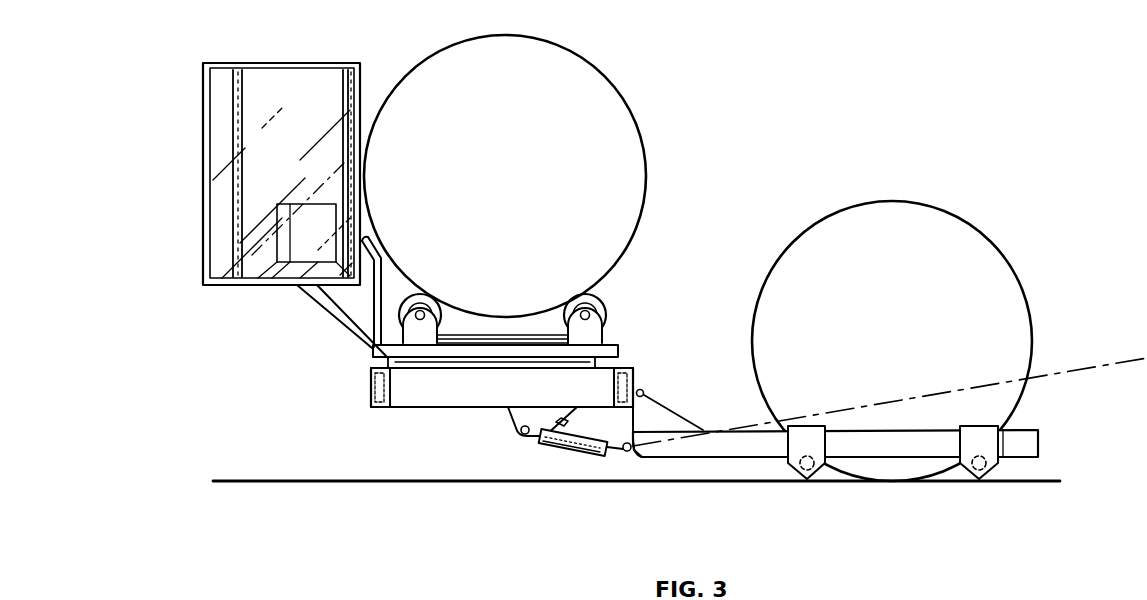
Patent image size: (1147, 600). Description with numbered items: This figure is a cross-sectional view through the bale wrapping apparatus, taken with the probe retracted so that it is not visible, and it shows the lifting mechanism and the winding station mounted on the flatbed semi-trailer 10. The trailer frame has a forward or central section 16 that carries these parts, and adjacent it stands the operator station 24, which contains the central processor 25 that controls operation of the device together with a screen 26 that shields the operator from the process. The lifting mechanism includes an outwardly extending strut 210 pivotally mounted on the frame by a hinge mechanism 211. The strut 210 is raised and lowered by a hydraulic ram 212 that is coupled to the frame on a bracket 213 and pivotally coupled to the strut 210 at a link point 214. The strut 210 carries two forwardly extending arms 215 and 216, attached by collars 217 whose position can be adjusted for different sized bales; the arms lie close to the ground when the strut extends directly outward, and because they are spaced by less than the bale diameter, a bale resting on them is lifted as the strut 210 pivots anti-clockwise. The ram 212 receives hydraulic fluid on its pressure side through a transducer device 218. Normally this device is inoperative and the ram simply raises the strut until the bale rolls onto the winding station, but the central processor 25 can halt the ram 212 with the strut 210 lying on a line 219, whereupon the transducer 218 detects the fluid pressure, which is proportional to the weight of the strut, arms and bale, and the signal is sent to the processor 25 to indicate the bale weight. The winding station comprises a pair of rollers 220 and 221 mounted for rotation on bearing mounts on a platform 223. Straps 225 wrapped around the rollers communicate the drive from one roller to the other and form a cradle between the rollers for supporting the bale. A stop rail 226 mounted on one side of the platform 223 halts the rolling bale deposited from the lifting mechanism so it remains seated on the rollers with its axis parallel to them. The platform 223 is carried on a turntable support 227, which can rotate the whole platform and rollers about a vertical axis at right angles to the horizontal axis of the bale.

The flatbed semi-trailer 10 is at (462, 413).
The forward section 16 is at (364, 385).
The operator station 24 is at (194, 178).
The central processor 25 is at (292, 238).
The screen 26 is at (226, 109).
The strut 210 is at (723, 449).
The hinge mechanism 211 is at (645, 391).
The hydraulic ram 212 is at (575, 455).
The bracket 213 is at (514, 420).
The link point 214 is at (632, 458).
The forwardly extending arm 215 is at (806, 472).
The forwardly extending arm 216 is at (997, 470).
The collar 217 is at (808, 430).
The transducer device 218 is at (578, 406).
The line 219 is at (1069, 370).
The roller 220 is at (578, 300).
The roller 221 is at (422, 302).
The platform 223 is at (617, 351).
The straps 225 is at (610, 300).
The stop rail 226 is at (388, 280).
The turntable support 227 is at (495, 366).